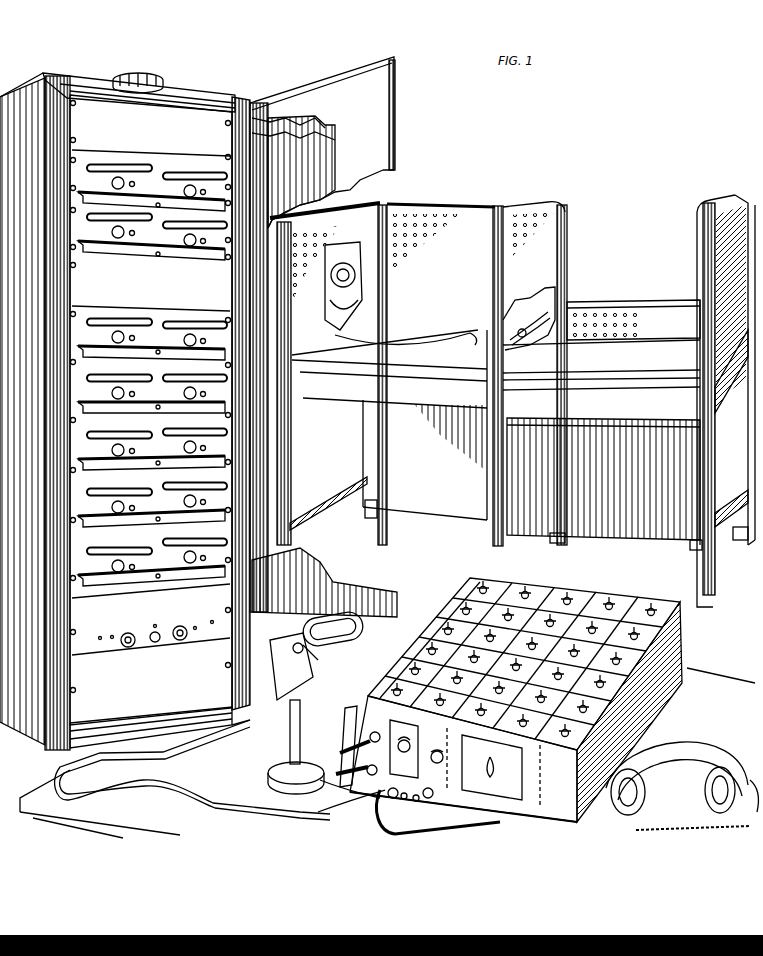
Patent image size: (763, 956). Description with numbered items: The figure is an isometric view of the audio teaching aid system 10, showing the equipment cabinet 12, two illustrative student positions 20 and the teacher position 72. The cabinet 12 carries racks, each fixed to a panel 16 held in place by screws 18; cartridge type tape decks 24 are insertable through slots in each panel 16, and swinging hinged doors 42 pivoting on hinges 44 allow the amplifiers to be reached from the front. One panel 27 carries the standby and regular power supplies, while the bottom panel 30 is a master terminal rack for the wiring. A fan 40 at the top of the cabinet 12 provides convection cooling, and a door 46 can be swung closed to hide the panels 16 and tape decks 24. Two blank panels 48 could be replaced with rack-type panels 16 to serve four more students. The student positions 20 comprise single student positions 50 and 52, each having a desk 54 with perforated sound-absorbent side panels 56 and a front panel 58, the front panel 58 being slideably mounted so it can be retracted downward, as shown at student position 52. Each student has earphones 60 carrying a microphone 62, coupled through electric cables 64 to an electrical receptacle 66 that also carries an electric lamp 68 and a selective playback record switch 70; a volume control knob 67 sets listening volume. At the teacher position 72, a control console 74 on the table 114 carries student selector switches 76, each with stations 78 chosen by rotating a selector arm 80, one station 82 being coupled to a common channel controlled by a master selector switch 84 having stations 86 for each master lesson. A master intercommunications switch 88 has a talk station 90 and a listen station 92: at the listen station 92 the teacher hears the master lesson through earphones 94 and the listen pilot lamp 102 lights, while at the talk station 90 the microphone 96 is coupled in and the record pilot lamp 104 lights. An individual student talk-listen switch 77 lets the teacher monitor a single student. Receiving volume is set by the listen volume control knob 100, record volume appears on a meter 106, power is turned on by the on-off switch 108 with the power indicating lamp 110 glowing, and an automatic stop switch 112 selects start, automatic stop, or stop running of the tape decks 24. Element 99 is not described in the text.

The audio teaching aid system 10 is at (535, 148).
The equipment cabinet 12 is at (151, 396).
The panel 16 is at (72, 397).
The screws 18 is at (167, 394).
The student positions 20 is at (611, 150).
The cartridge type tape decks 24 is at (157, 356).
The panel 27 is at (166, 620).
The bottom panel 30 is at (163, 688).
The fan 40 is at (138, 67).
The swinging hinged doors 42 is at (151, 392).
The hinges 44 is at (146, 376).
The door 46 is at (323, 330).
The blank panels 48 is at (160, 128).
The single student position 50 is at (418, 361).
The single student position 52 is at (664, 152).
The desk 54 is at (641, 368).
The side panels 56 is at (493, 362).
The front panel 58 is at (671, 330).
The earphones 60 is at (373, 285).
The microphone 62 is at (332, 286).
The electric cables 64 is at (406, 340).
The electrical receptacle 66 is at (538, 323).
The volume control knob 67 is at (544, 330).
The electric lamp 68 is at (603, 460).
The selective playback record switch 70 is at (615, 473).
The teacher position 72 is at (735, 643).
The control console 74 is at (524, 657).
The student selector switches 76 is at (552, 693).
The individual student talk-listen switch 77 is at (577, 599).
The stations 78 is at (593, 627).
The selector arm 80 is at (633, 634).
The station 82 is at (561, 665).
The master selector switch 84 is at (463, 807).
The stations 86 is at (493, 767).
The master intercommunications switch 88 is at (445, 785).
The talk station 90 is at (493, 768).
The listen station 92 is at (426, 741).
The earphones 94 is at (682, 786).
The microphone 96 is at (327, 655).
The cord 99 is at (351, 805).
The listen volume control knob 100 is at (392, 800).
The listen pilot lamp 102 is at (429, 799).
The record pilot lamp 104 is at (416, 811).
The meter 106 is at (355, 722).
The on-off switch 108 is at (343, 737).
The power indicating lamp 110 is at (360, 708).
The automatic stop switch 112 is at (347, 771).
The table 114 is at (162, 811).